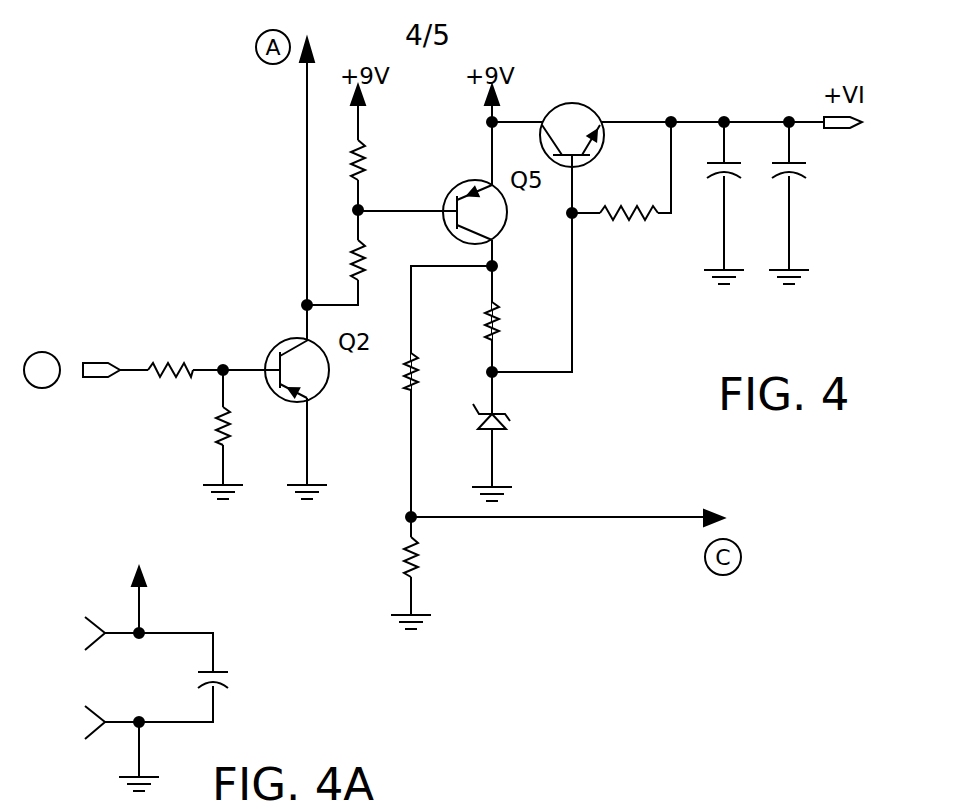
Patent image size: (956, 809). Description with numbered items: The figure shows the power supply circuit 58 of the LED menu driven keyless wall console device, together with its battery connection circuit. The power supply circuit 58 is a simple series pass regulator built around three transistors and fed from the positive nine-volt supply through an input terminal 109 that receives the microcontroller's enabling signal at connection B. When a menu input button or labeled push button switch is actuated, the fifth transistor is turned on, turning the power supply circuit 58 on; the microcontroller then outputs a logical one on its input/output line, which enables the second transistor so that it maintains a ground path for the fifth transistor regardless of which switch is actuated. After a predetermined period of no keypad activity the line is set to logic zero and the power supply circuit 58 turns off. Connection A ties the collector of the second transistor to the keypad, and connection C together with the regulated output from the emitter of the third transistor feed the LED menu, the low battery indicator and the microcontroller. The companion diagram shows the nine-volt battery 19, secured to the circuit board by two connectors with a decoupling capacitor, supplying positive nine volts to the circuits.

In FIG. 4, the input terminal B 109 is at (152, 356).
In FIG. 4, the power supply circuit 58 is at (557, 78).
In FIG. 4A, the nine-volt battery 19 is at (178, 616).